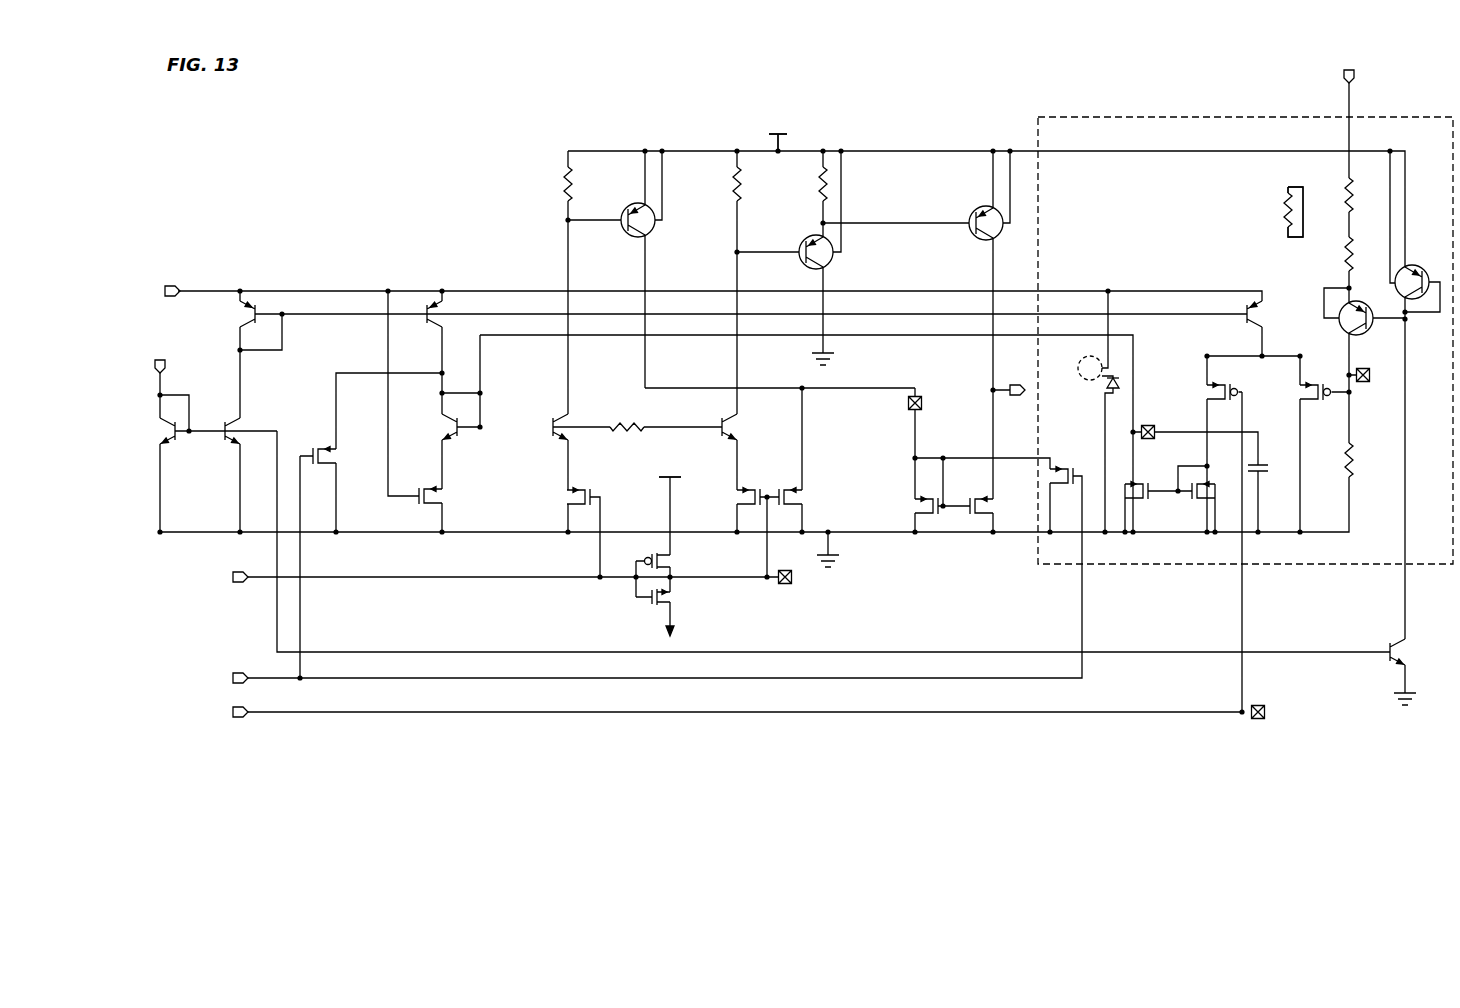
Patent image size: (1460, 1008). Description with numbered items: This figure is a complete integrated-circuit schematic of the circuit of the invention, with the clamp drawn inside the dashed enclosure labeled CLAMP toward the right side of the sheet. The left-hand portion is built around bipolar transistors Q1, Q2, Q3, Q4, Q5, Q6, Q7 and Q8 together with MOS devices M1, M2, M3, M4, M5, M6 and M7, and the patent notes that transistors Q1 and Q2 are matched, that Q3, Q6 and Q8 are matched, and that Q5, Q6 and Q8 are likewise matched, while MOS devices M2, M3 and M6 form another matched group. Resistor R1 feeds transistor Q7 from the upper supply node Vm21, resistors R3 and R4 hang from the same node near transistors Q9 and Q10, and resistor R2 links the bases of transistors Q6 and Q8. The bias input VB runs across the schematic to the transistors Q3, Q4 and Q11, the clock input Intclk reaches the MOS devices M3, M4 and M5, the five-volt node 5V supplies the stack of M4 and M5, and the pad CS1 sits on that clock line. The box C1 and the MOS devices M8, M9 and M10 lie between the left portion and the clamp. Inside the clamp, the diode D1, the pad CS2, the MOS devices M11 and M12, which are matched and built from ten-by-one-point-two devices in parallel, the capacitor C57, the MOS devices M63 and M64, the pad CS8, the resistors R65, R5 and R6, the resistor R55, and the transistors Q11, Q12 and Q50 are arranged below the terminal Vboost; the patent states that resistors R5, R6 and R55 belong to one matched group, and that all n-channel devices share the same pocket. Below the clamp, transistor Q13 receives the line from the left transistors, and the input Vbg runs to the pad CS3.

The transistor Q1 is at (155, 431).
The transistor Q2 is at (246, 424).
The transistor Q3 is at (234, 319).
The bipolar transistor Q4 is at (450, 322).
The transistor Q5 is at (438, 427).
The transistor Q6 is at (550, 414).
The bipolar transistor Q7 is at (634, 206).
The transistor Q8 is at (743, 427).
The bipolar transistor Q9 is at (806, 247).
The bipolar transistor Q10 is at (965, 217).
The bipolar transistor Q11 is at (1273, 314).
The bipolar transistor Q12 is at (1337, 325).
The bipolar transistor Q13 is at (1379, 641).
The bipolar transistor Q50 is at (1424, 270).
The MOS transistor M1 is at (318, 441).
The MOS device M2 is at (424, 482).
The MOS device M3 is at (582, 483).
The MOS transistor M4 is at (644, 552).
The MOS transistor M5 is at (644, 608).
The MOS device M6 is at (750, 484).
The MOS transistor M7 is at (788, 484).
The MOS transistor M8 is at (910, 500).
The MOS transistor M9 is at (996, 500).
The MOS transistor M10 is at (1072, 463).
The MOS device M11 is at (1149, 476).
The MOS device M12 is at (1188, 504).
The MOS transistor M63 is at (1238, 381).
The MOS transistor M64 is at (1323, 375).
The resistor R1 is at (553, 184).
The resistor R2 is at (627, 412).
The resistor R3 is at (721, 184).
The resistor R4 is at (809, 184).
The resistor R5 is at (1334, 254).
The resistor R6 is at (1334, 457).
The resistor R55 is at (1272, 210).
The resistor R65 is at (1330, 195).
The capacitor / pad C1 is at (901, 404).
The capacitor C57 is at (1273, 454).
The current source pad CS1 is at (783, 591).
The current source pad CS2 is at (1165, 421).
The current source pad CS3 is at (1272, 700).
The current source pad CS8 is at (1376, 390).
The diode D1 is at (1098, 382).
The bias voltage input VB is at (158, 295).
The supply node Vm21 is at (781, 129).
The 5V supply 5V is at (672, 465).
The internal clock input Intclk is at (217, 578).
The bandgap voltage input Vbg is at (222, 713).
The boost voltage terminal Vboost is at (1355, 64).
The clamp CLAMP is at (1245, 325).